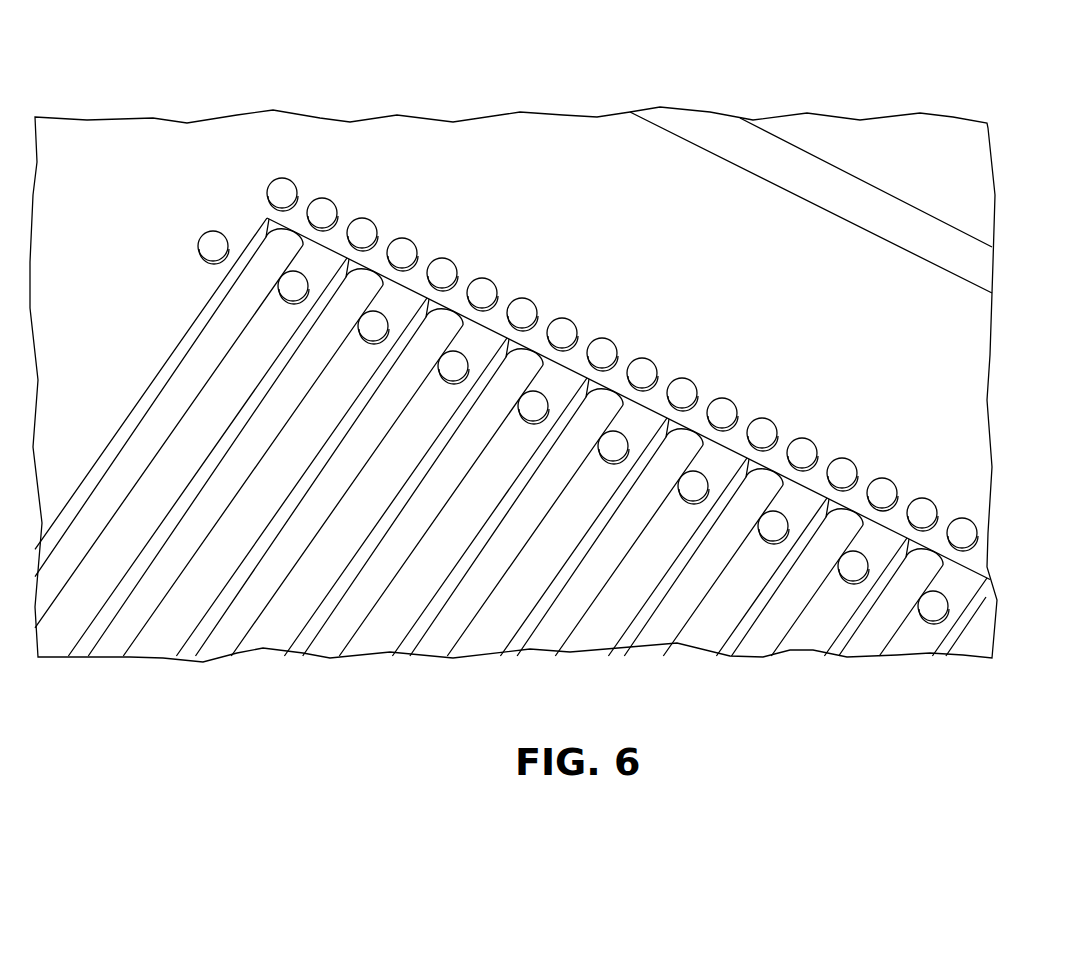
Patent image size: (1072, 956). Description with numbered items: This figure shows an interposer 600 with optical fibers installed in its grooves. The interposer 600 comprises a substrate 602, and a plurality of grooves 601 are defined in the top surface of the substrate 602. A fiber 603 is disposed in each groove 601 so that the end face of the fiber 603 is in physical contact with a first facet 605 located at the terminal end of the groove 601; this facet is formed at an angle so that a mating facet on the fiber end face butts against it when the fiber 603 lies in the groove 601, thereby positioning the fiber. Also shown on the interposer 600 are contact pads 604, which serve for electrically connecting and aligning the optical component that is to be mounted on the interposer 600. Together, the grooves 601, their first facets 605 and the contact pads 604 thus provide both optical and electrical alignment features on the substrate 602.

The interposer 600 is at (1000, 333).
The groove 601 is at (937, 577).
The substrate 602 is at (967, 493).
The fiber 603 is at (908, 593).
The contact pads 604 is at (937, 608).
The first facet 605 is at (910, 573).